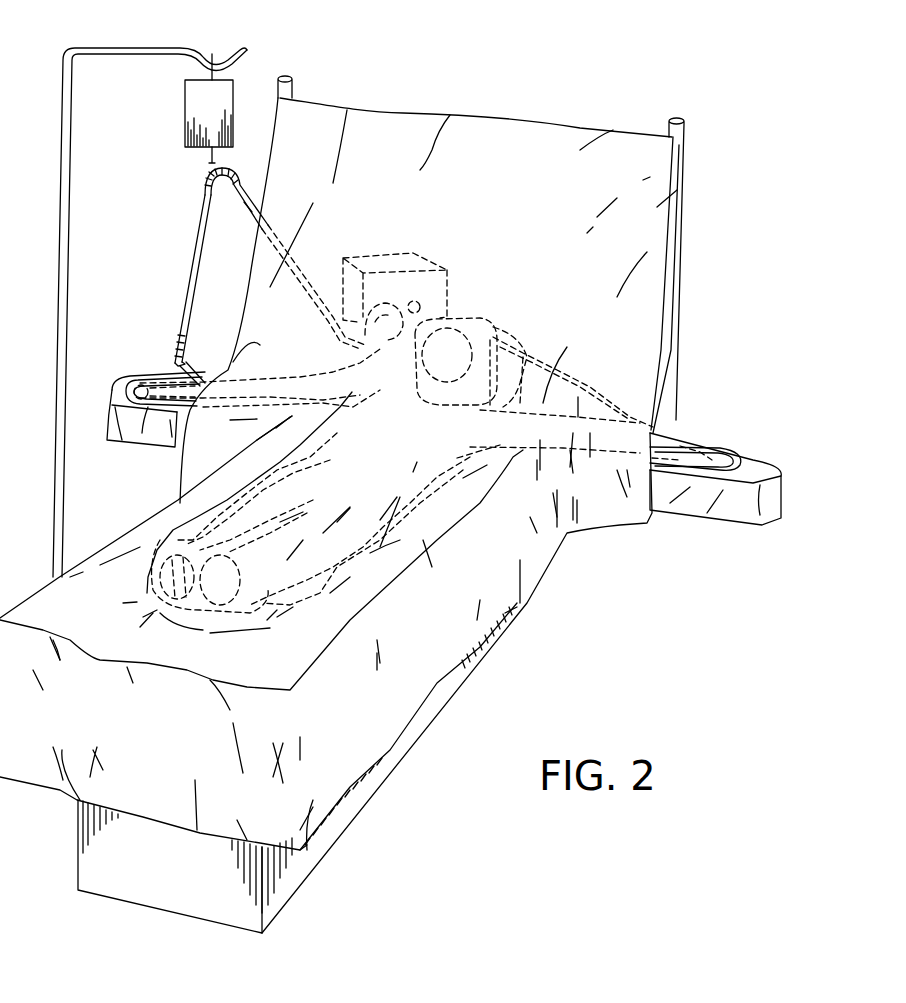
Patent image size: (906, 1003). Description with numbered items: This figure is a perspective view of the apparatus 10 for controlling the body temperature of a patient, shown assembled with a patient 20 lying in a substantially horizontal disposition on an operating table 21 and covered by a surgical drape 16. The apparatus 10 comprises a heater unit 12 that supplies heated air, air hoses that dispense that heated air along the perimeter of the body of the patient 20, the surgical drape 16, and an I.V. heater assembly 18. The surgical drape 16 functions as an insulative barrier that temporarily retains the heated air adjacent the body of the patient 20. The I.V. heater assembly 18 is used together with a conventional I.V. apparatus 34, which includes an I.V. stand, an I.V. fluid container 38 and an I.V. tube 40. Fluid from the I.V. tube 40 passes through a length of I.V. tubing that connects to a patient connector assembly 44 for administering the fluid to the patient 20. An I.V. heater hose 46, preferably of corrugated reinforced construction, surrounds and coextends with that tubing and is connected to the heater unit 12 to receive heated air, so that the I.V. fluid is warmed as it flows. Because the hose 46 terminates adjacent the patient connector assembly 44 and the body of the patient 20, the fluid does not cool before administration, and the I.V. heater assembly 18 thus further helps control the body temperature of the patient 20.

The apparatus for controlling the body temperature of a patient 10 is at (718, 240).
The heater unit 12 is at (412, 254).
The surgical drape 16 is at (617, 323).
The I.V. heater assembly 18 is at (237, 183).
The patient 20 is at (652, 424).
The operating table 21 is at (753, 458).
The I.V. apparatus 34 is at (163, 44).
The I.V. fluid container 38 is at (192, 103).
The I.V. tube 40 is at (209, 160).
The patient connector assembly 44 is at (186, 364).
The I.V. heater hose 46 is at (248, 208).